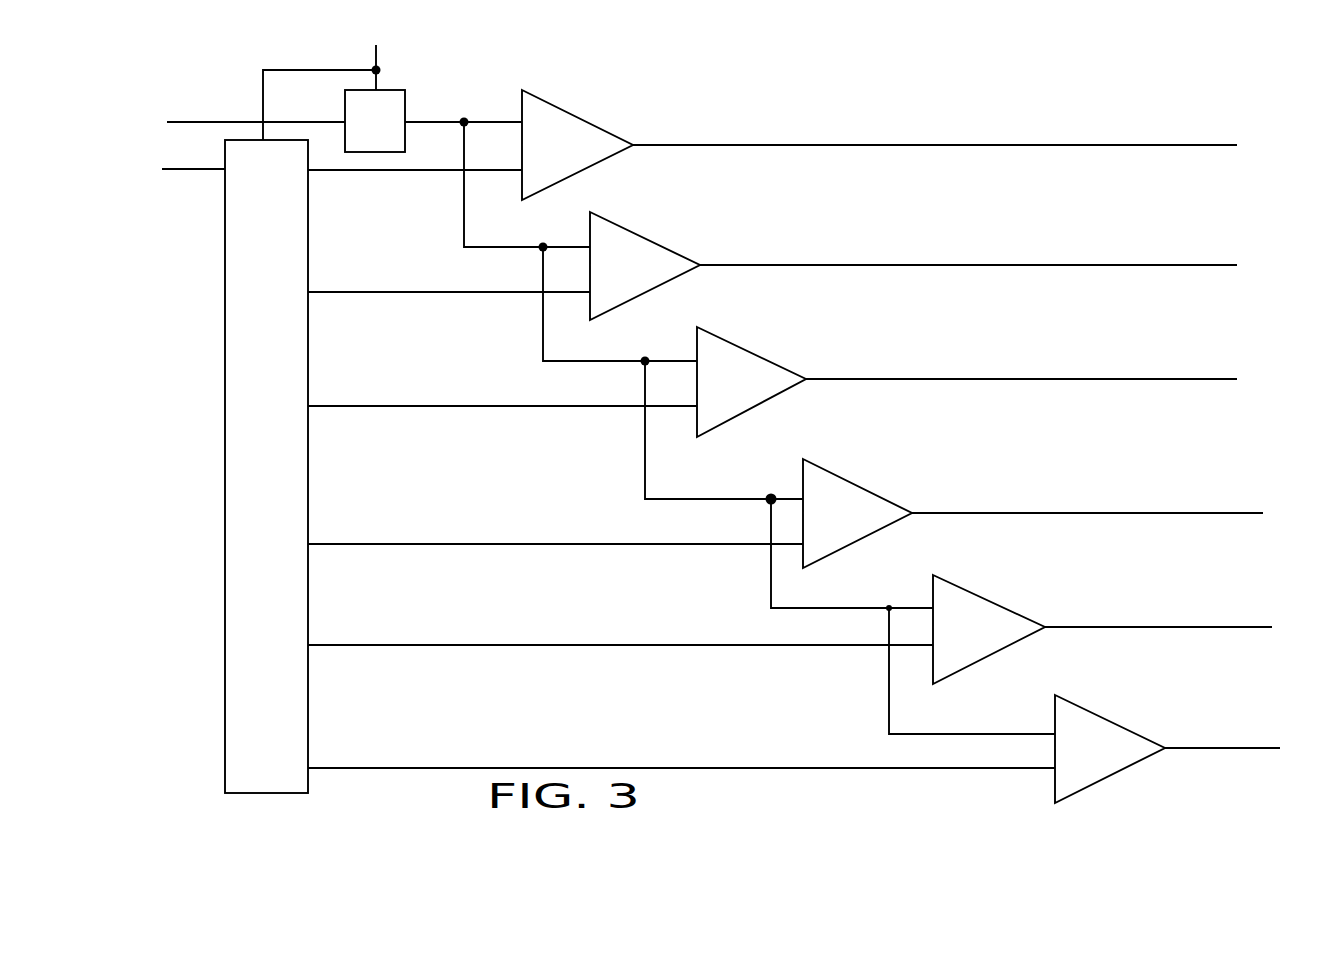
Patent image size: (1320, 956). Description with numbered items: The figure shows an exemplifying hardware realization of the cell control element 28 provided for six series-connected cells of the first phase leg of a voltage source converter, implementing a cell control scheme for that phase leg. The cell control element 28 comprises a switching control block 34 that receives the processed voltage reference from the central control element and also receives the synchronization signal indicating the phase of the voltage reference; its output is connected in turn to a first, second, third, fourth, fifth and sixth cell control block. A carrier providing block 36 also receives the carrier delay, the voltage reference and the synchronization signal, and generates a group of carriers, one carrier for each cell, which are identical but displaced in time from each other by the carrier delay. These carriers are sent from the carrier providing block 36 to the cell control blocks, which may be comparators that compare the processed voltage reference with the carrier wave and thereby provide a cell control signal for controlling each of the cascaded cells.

The cell control element 28 is at (1038, 97).
The switching control block 34 is at (375, 121).
The carrier providing block 36 is at (266, 466).